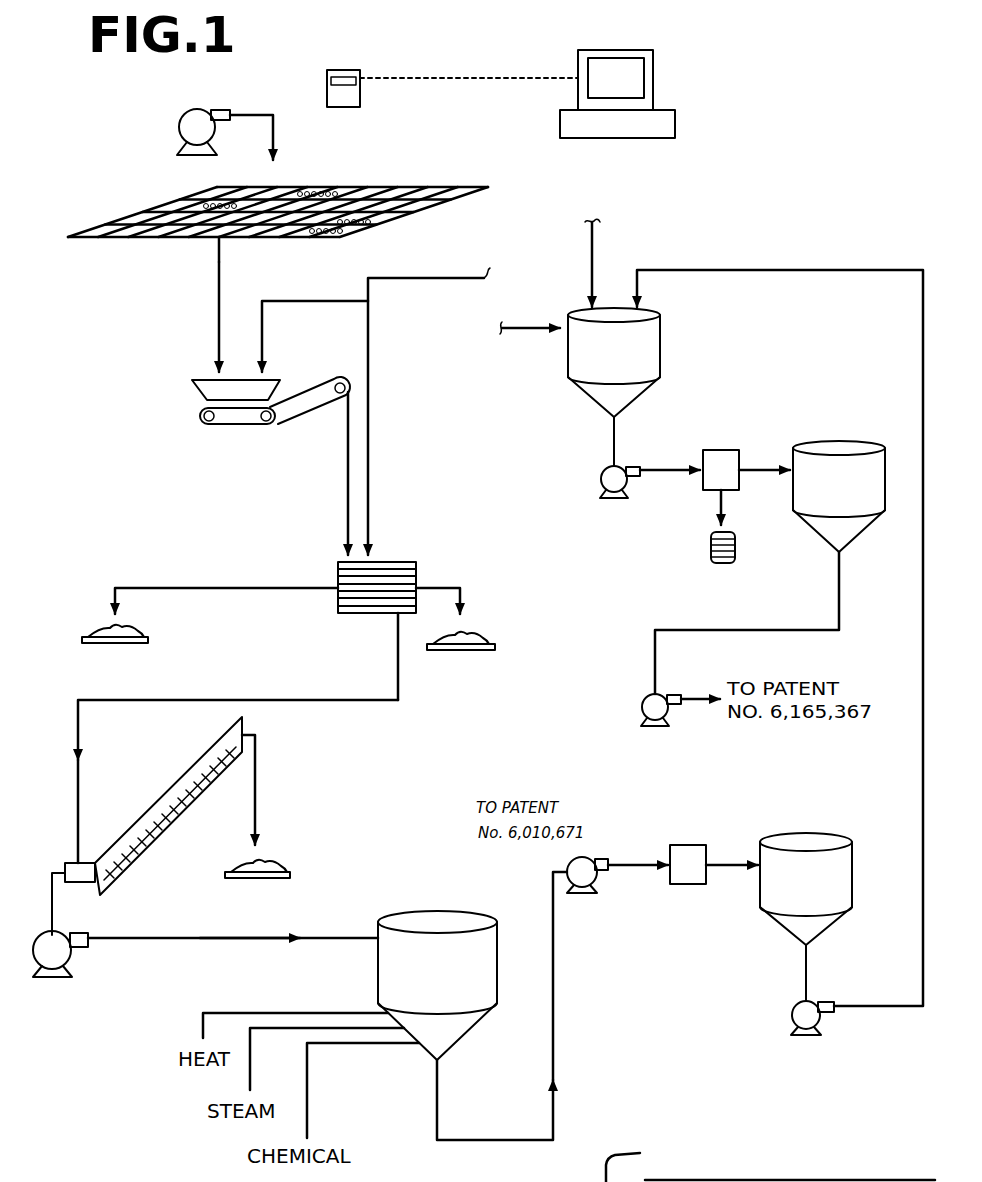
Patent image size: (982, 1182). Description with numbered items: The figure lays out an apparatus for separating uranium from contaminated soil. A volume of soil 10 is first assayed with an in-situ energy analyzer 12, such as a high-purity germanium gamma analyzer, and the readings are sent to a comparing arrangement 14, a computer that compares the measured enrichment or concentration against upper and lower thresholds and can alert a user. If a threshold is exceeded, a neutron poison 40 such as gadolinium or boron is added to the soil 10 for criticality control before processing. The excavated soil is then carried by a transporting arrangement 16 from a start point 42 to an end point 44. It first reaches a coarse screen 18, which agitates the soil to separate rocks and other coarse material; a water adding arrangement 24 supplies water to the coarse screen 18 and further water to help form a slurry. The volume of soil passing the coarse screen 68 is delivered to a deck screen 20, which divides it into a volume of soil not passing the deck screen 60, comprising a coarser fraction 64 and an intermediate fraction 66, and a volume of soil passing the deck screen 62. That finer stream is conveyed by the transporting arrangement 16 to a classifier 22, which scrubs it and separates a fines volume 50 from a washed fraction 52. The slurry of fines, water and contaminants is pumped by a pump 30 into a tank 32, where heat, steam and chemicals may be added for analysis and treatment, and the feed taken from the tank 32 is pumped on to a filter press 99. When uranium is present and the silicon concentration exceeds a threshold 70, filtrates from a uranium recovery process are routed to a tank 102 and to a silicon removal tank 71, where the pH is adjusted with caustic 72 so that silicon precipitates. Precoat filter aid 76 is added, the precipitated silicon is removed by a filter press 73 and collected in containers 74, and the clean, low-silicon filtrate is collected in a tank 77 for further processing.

The volume of soil 10 is at (377, 183).
The in-situ energy analyzer 12 is at (355, 107).
The comparing arrangement 14 is at (655, 87).
The transporting arrangement 16 is at (219, 300).
The coarse screen 18 is at (205, 382).
The deck screen 20 is at (400, 560).
The classifier 22 is at (158, 800).
The water adding arrangement 24 is at (277, 300).
The pump 30 is at (75, 958).
The tank 32 is at (395, 977).
The neutron poison 40 is at (273, 112).
The start point 42 is at (216, 240).
The end point 44 is at (375, 940).
The fines volume 50 is at (55, 906).
The washed fraction 52 is at (256, 826).
The volume of soil not passing the deck screen 60 is at (185, 588).
The volume of soil passing the deck screen 62 is at (398, 672).
The fraction greater than 51 millimeters in diameter 64 is at (105, 628).
The fraction between 2 and 51 millimeters in diameter 66 is at (467, 640).
The volume of soil passing the coarse screen 68 is at (318, 378).
The silicon concentration greater than 100 parts per million by volume 70 is at (670, 270).
The silicon removal tank 71 is at (603, 420).
The caustic 72 is at (592, 272).
The filter press 73 is at (522, 328).
The containers 74 is at (715, 567).
The precoat filter aid 76 is at (665, 472).
The tank 77 is at (838, 440).
The filter press 99 is at (688, 845).
The tank 102 is at (790, 888).